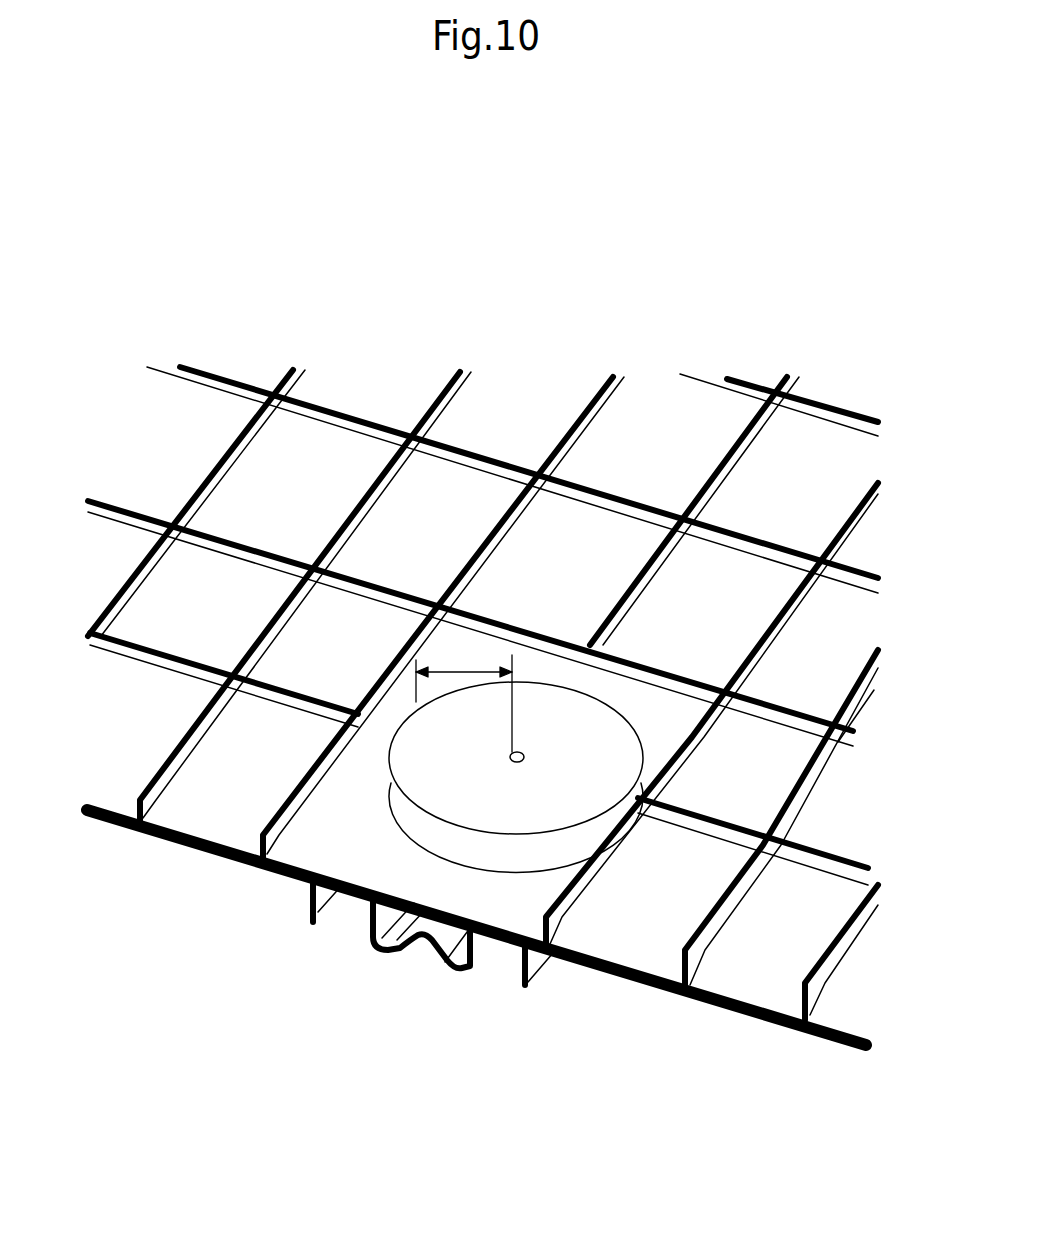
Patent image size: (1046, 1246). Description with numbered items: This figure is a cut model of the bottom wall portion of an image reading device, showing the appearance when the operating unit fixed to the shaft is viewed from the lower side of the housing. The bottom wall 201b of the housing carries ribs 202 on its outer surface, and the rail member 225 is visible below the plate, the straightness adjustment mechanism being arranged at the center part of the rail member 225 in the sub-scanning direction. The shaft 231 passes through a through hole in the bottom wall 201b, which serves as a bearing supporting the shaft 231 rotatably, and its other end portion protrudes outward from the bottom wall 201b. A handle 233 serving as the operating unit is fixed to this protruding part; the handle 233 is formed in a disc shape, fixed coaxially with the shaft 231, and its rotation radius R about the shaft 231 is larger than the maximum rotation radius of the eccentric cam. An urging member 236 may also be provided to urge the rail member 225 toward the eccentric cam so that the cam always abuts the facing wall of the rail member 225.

The bottom wall 201b is at (152, 420).
The ribs 202 is at (770, 618).
The rail member 225 is at (380, 947).
The shaft 231 is at (516, 764).
The handle 233 is at (455, 782).
The urging member 236 is at (468, 853).